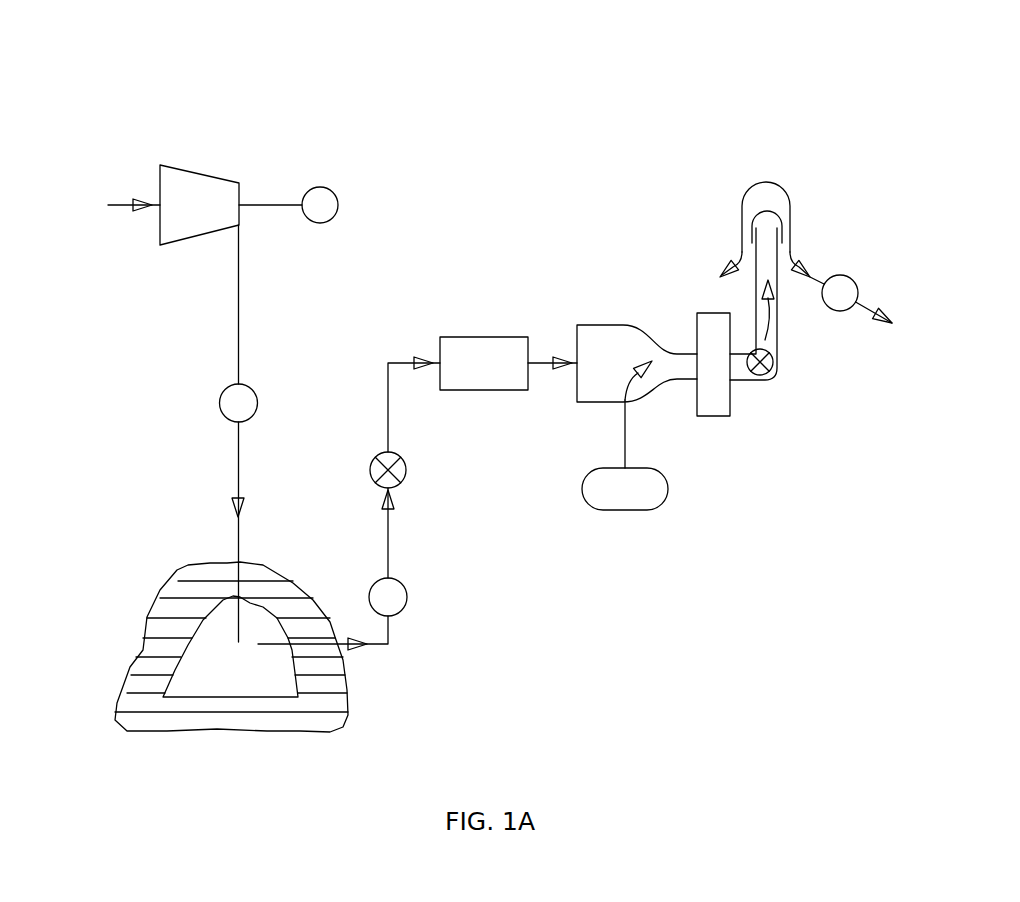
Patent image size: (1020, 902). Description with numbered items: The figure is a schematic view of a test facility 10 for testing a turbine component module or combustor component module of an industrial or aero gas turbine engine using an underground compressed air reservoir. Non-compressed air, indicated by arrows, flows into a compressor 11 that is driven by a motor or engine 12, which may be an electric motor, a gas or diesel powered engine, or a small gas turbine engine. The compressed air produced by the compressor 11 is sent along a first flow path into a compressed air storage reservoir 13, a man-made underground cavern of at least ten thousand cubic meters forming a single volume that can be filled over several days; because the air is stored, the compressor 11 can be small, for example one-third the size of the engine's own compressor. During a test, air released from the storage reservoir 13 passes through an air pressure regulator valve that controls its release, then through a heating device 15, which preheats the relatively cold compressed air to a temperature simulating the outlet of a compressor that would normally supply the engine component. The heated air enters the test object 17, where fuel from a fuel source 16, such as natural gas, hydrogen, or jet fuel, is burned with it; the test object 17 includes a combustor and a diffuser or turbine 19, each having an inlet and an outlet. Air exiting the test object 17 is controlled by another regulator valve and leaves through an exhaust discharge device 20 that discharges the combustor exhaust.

The test facility 10 is at (133, 69).
The compressor 11 is at (192, 183).
The motor or engine 12 is at (320, 187).
The compressed air storage reservoir 13 is at (200, 670).
The heating device 15 is at (483, 350).
The fuel source 16 is at (627, 492).
The test object 17 is at (616, 348).
The diffuser or turbine 19 is at (720, 397).
The exhaust discharge device 20 is at (770, 200).